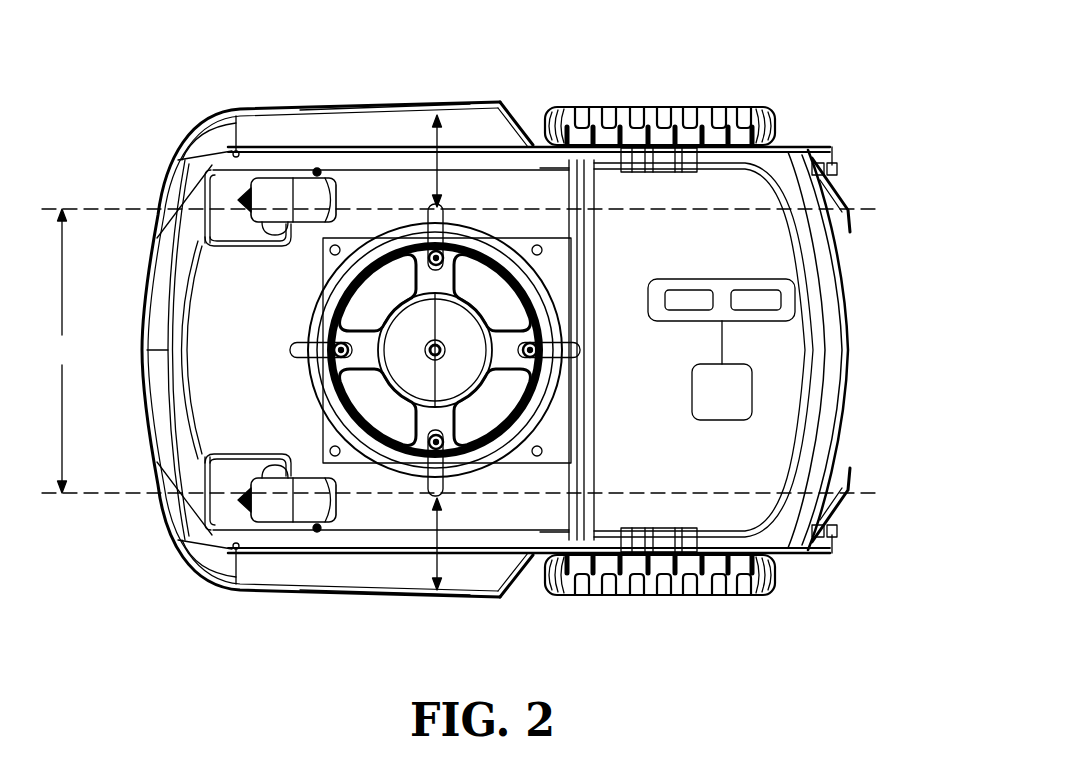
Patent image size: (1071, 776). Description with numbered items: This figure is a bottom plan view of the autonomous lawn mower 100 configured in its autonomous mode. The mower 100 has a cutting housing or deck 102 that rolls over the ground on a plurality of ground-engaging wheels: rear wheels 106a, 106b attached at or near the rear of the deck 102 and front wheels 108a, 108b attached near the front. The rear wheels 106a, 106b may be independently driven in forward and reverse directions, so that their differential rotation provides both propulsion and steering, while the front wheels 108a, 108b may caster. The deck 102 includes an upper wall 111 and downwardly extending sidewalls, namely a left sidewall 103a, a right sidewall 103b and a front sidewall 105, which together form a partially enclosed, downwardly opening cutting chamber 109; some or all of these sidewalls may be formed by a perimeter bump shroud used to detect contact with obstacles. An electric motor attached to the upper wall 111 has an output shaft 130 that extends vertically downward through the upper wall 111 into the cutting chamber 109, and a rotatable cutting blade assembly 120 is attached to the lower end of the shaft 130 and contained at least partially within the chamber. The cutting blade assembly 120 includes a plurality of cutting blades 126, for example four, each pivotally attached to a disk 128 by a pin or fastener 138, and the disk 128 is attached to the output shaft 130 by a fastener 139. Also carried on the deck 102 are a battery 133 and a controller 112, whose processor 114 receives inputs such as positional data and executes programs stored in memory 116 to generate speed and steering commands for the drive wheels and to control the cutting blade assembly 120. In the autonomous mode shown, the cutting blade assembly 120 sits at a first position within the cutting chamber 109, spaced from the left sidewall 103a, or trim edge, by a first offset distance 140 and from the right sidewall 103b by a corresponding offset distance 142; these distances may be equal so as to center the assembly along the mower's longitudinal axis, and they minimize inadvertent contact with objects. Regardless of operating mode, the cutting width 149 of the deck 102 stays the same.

The autonomous lawn mower 100 is at (138, 91).
The cutting housing or deck 102 is at (188, 112).
The left sidewall 103a is at (422, 103).
The right sidewall 103b is at (380, 597).
The front sidewall 105 is at (146, 422).
The rear wheel 106a is at (678, 107).
The rear wheel 106b is at (678, 597).
The front wheel 108a is at (277, 187).
The front wheel 108b is at (263, 527).
The cutting chamber 109 is at (385, 217).
The upper wall 111 is at (335, 257).
The controller 112 is at (797, 292).
The processor 114 is at (690, 290).
The memory 116 is at (760, 290).
The rotatable cutting blade assembly 120 is at (369, 476).
The cutting blades 126 is at (445, 208).
The disk 128 is at (432, 352).
The output shaft 130 is at (440, 350).
The battery 133 is at (752, 378).
The pin or fastener 138 is at (425, 270).
The fastener 139 is at (395, 392).
The first offset distance 140 is at (442, 165).
The offset distance 142 is at (443, 537).
The cutting width 149 is at (62, 351).